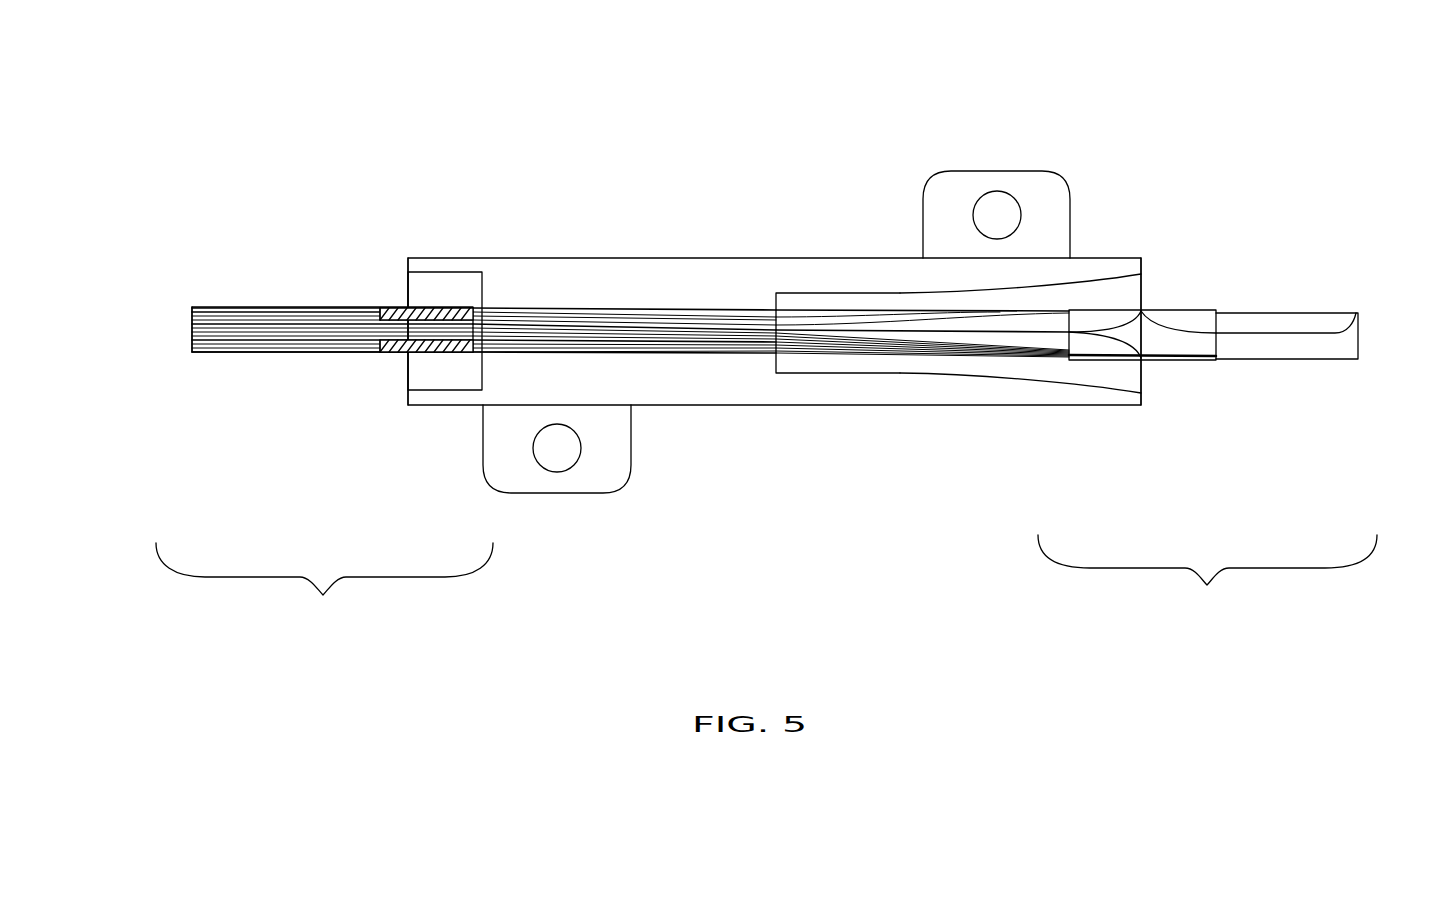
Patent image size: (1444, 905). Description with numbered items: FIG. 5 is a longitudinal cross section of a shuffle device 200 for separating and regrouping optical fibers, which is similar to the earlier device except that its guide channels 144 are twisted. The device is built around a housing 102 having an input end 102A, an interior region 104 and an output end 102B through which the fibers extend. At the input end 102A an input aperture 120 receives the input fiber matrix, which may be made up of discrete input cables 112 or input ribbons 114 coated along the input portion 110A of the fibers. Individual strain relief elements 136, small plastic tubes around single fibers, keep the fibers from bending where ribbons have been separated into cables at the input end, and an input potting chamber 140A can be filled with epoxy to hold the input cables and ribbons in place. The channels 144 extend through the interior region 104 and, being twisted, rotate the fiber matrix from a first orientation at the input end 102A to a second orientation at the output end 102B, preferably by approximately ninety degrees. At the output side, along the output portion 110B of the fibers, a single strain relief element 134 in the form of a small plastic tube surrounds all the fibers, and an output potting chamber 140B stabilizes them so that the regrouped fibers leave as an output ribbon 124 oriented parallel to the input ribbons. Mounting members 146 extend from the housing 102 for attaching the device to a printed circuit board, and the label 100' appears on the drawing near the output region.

The shuffle device 200 is at (657, 49).
The housing 102 is at (560, 258).
The input end 102A is at (408, 265).
The output end 102B is at (1142, 276).
The interior region 104 is at (638, 271).
The input cable 112 is at (222, 307).
The input ribbon 114 is at (190, 328).
The input aperture 120 is at (400, 307).
The output ribbon 124 is at (1360, 338).
The strain relief element 134 is at (1112, 312).
The individual strain relief element 136 is at (402, 312).
The input potting chamber 140A is at (433, 285).
The output potting chamber 140B is at (1050, 365).
The channel 144 is at (727, 312).
The mounting member 146 is at (1045, 193).
The input portion 110A is at (324, 585).
The output portion 110B is at (1207, 580).
The connector 100' is at (1253, 360).